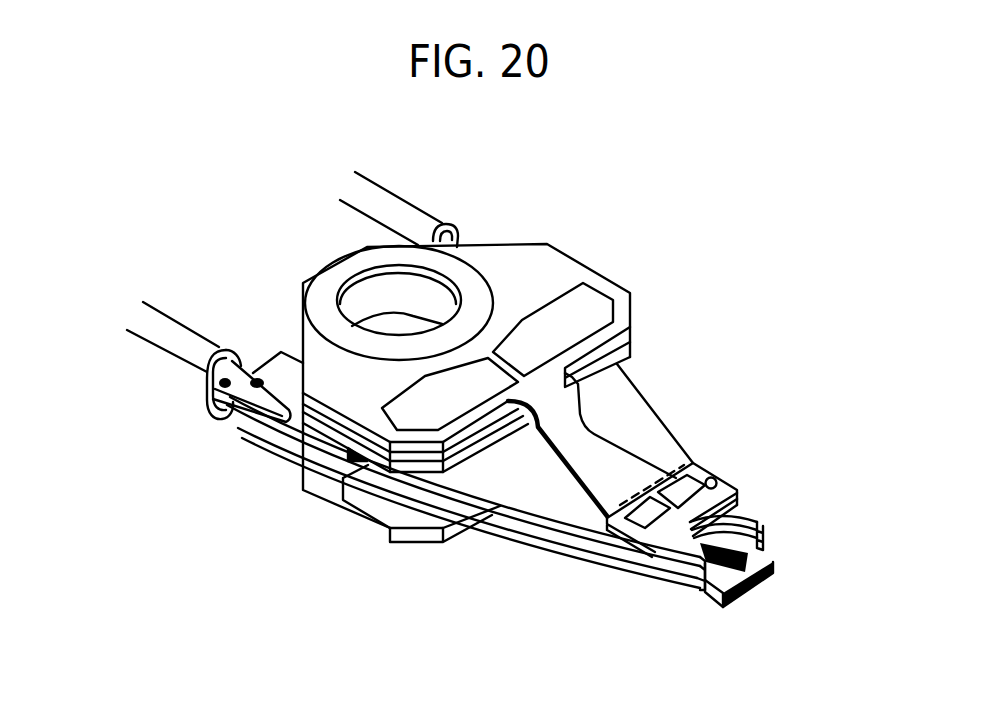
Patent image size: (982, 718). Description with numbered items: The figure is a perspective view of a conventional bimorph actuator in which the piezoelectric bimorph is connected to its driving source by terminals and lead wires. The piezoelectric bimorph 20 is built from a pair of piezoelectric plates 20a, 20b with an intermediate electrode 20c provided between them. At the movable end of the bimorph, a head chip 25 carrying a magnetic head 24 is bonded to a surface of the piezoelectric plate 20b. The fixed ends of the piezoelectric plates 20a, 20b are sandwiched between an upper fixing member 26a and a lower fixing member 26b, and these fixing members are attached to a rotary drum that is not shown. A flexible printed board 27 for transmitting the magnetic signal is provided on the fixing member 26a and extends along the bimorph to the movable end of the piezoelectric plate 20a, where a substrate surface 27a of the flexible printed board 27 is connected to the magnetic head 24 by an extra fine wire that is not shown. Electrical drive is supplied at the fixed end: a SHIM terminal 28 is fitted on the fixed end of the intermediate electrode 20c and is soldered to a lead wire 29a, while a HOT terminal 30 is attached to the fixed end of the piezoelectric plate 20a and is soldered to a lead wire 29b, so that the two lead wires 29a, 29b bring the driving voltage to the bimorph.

The piezoelectric bimorph 20 is at (562, 553).
The piezoelectric plate 20a is at (765, 530).
The piezoelectric plate 20b is at (767, 545).
The intermediate electrode 20c is at (253, 422).
The magnetic head 24 is at (770, 583).
The head chip 25 is at (700, 593).
The fixing member 26a is at (627, 355).
The fixing member 26b is at (413, 535).
The flexible printed board 27 is at (345, 385).
The substrate surface 27a is at (687, 493).
The SHIM terminal 28 is at (214, 408).
The lead wire 29a is at (152, 336).
The lead wire 29b is at (387, 204).
The HOT terminal 30 is at (455, 240).